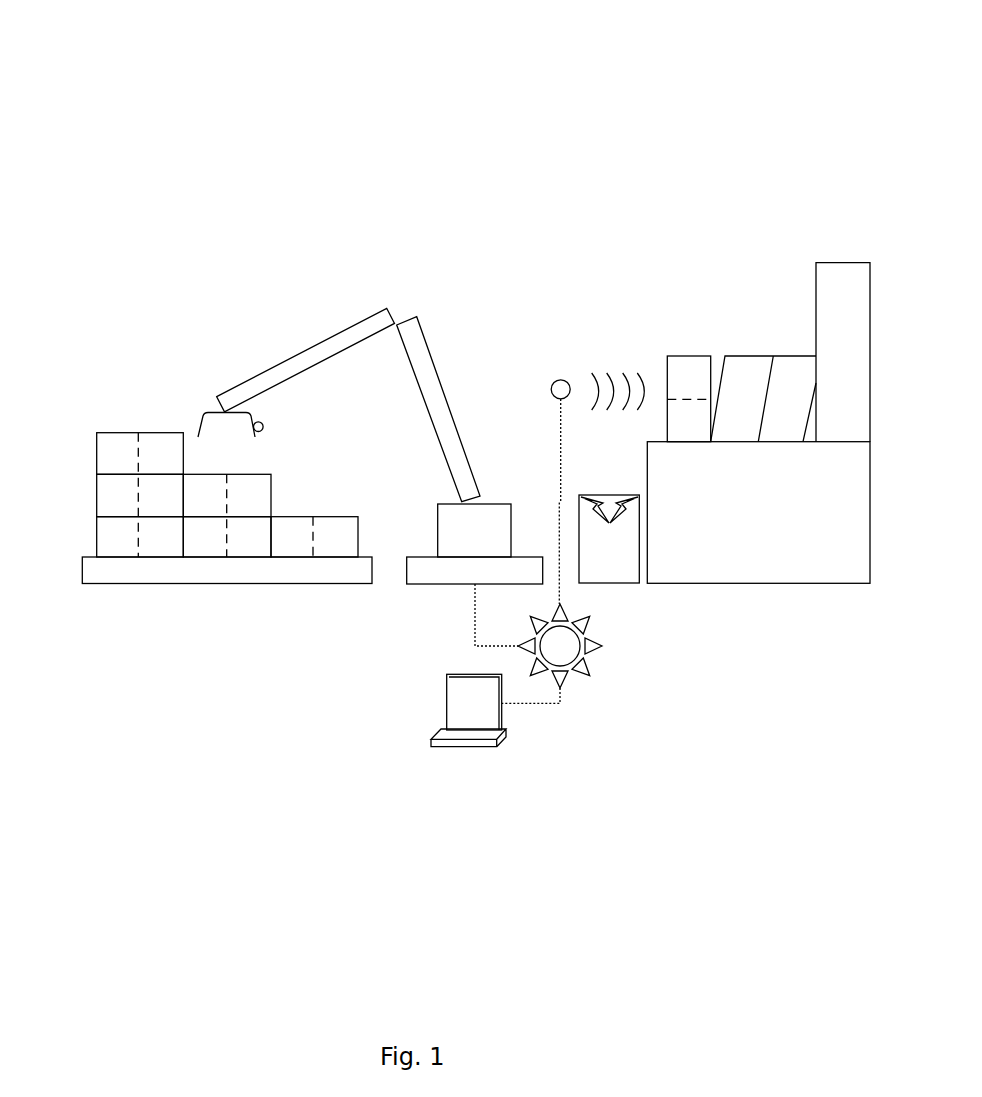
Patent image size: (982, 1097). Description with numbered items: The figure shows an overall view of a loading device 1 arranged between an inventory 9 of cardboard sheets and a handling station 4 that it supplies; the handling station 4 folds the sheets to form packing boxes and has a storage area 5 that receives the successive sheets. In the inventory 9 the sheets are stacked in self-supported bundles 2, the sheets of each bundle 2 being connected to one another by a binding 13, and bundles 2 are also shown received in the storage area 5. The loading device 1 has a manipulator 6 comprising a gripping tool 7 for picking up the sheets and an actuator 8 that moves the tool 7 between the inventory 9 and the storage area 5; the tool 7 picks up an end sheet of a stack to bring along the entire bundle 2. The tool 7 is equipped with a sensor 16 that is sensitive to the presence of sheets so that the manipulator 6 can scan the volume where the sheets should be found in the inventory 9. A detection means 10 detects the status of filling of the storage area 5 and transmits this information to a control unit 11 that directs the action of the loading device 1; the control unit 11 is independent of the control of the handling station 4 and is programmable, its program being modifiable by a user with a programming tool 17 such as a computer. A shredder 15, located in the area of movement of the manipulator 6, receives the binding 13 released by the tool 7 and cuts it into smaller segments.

The loading device 1 is at (516, 92).
The bundle 2 is at (94, 419).
The handling station 4 is at (770, 191).
The storage area 5 is at (709, 278).
The manipulator 6 is at (402, 597).
The gripping tool 7 is at (198, 396).
The actuator 8 is at (438, 326).
The inventory 9 is at (132, 627).
The detection means 10 is at (569, 362).
The control unit 11 is at (571, 695).
The binding 13 is at (213, 544).
The shredder 15 is at (627, 602).
The sensor 16 is at (266, 411).
The programming tool 17 is at (444, 761).